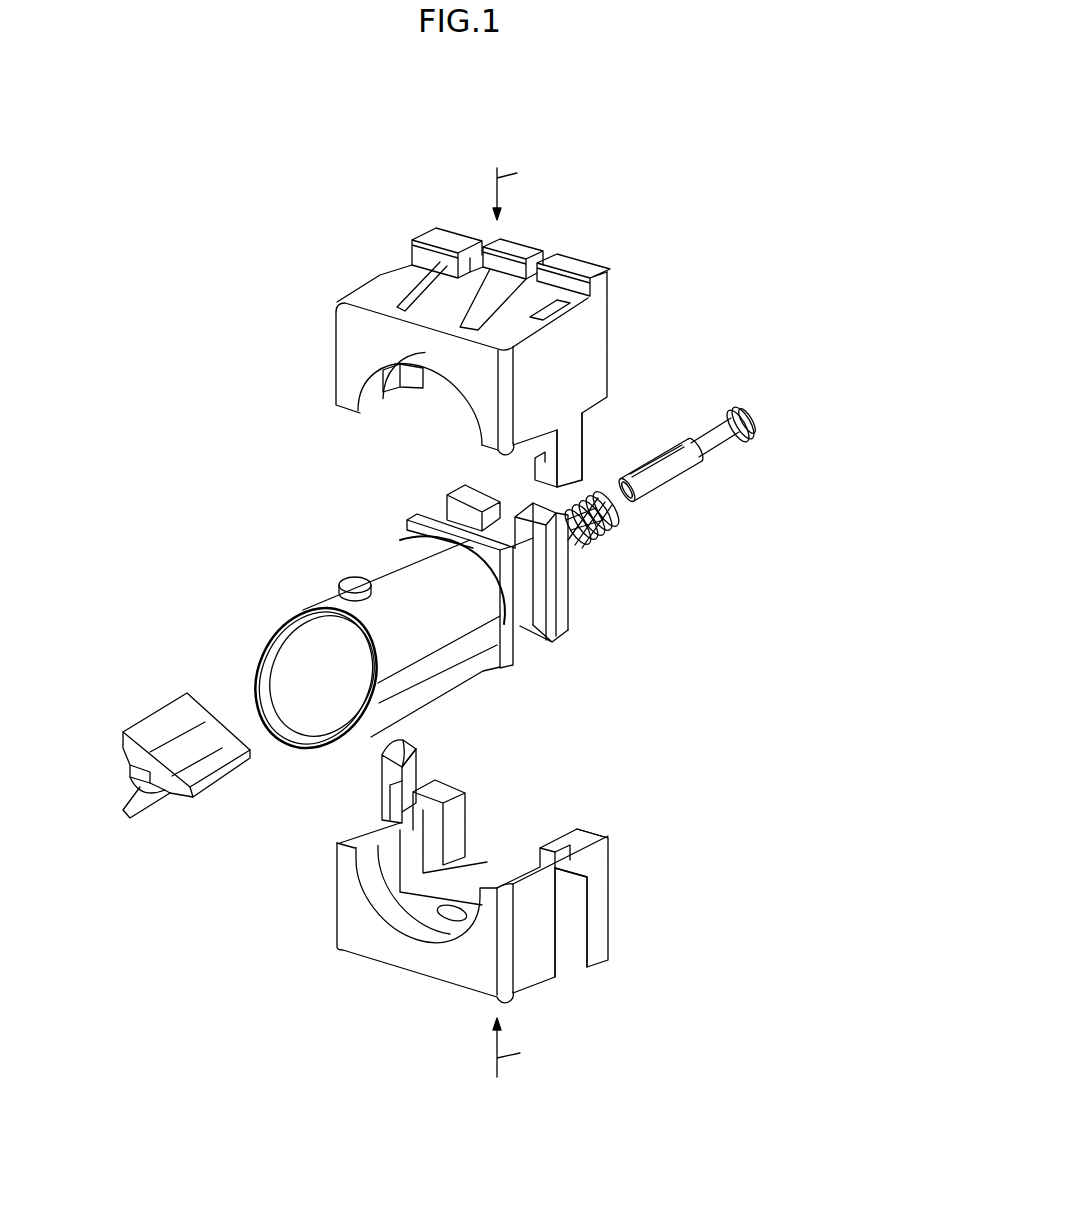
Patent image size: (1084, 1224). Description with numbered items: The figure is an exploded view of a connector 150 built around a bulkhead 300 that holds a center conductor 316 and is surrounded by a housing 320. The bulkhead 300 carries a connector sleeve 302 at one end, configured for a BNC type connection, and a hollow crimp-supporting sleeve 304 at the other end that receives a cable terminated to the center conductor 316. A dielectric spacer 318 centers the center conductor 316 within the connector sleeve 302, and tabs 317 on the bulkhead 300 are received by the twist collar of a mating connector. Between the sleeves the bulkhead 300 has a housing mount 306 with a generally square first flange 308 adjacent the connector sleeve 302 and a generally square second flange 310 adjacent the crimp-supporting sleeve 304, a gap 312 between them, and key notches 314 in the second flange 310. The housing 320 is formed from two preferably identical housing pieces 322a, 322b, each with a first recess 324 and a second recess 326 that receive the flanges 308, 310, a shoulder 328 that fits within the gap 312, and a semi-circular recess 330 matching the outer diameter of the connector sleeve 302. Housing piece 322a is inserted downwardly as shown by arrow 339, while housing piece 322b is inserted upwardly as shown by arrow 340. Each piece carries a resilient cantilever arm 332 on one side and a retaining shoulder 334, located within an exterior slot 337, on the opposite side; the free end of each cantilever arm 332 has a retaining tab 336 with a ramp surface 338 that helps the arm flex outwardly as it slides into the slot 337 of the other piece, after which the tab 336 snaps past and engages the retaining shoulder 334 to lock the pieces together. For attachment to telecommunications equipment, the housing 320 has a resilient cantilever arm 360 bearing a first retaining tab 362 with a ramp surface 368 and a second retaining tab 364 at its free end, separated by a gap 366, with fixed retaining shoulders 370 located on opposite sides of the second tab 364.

The connector 150 is at (813, 446).
The bulkhead 300 is at (307, 575).
The connector sleeve 302 is at (262, 633).
The crimp-supporting sleeve 304 is at (613, 532).
The housing mount 306 is at (380, 491).
The first flange 308 is at (513, 665).
The second flange 310 is at (573, 621).
The gap 312 is at (571, 630).
The key notch 314 is at (480, 483).
The center conductor 316 is at (705, 418).
The tab 317 is at (350, 577).
The dielectric spacer 318 is at (140, 725).
The housing 320 is at (624, 273).
The housing piece 322a is at (358, 290).
The housing piece 322b is at (610, 927).
The first recess 324 is at (423, 907).
The second recess 326 is at (567, 835).
The shoulder 328 is at (445, 838).
The semi-circular recess 330 is at (397, 377).
The resilient cantilever arm 332 is at (577, 447).
The retaining shoulder 334 is at (563, 870).
The retaining tab 336 is at (420, 768).
The exterior slot 337 is at (563, 920).
The ramp surface 338 is at (413, 753).
The arrow 339 is at (527, 188).
The arrow 340 is at (527, 1047).
The resilient cantilever arm 360 is at (447, 307).
The first retaining tab 362 is at (470, 262).
The second retaining tab 364 is at (513, 252).
The gap 366 is at (520, 287).
The ramp surface 368 is at (467, 283).
The fixed retaining shoulder 370 is at (441, 236).